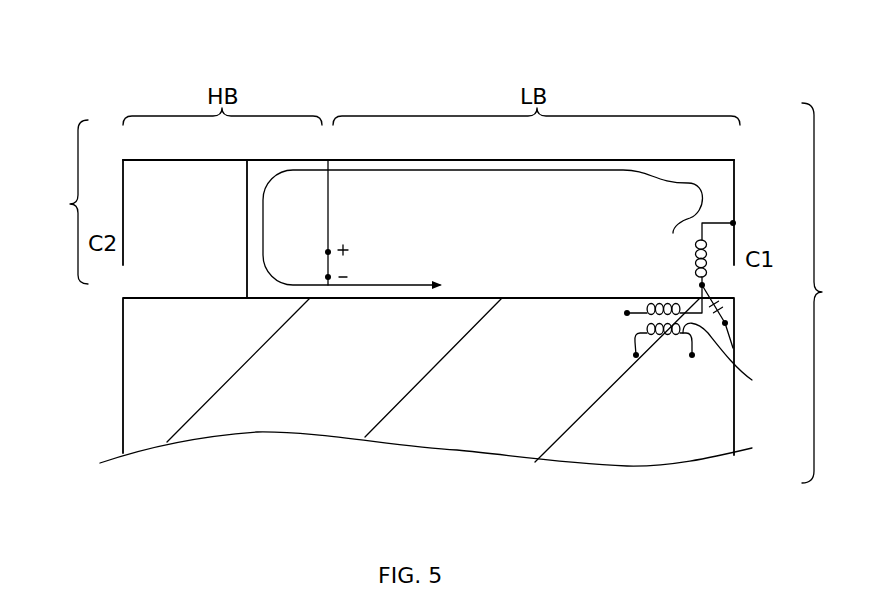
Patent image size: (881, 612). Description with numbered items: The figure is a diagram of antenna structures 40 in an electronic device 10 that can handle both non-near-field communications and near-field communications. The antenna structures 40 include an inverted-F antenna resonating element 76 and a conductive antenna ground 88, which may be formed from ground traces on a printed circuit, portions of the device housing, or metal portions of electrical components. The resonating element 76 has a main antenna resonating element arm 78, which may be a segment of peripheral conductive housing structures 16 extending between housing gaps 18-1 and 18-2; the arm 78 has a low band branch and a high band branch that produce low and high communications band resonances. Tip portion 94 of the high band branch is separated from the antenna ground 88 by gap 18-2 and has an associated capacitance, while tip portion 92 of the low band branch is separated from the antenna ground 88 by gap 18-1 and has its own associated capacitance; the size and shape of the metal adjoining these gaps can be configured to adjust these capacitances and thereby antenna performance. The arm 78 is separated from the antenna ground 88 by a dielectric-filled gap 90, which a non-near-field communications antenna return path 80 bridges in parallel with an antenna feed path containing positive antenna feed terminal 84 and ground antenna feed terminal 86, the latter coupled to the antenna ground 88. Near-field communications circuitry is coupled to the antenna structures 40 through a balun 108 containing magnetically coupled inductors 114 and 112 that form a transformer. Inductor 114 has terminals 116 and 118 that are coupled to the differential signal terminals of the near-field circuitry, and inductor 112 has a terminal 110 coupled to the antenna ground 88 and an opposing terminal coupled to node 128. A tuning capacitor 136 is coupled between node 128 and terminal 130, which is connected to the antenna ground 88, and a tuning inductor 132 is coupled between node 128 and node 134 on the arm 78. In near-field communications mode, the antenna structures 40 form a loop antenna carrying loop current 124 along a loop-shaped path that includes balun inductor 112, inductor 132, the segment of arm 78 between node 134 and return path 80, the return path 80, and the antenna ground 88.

The electronic device 10 is at (828, 293).
The peripheral conductive housing structures 16 is at (460, 212).
The gap 18-1 is at (742, 283).
The gap 18-2 is at (110, 284).
The antenna structures 40 is at (90, 80).
The inverted-F antenna resonating element 76 is at (64, 202).
The main antenna resonating element arm 78 is at (365, 160).
The non-near-field communications antenna return path 80 is at (246, 216).
The positive antenna feed terminal 84 is at (325, 251).
The ground antenna feed terminal 86 is at (327, 280).
The antenna ground 88 is at (122, 392).
The gap 90 is at (185, 180).
The tip portion 92 is at (736, 243).
The tip portion 94 is at (125, 240).
The balun 108 is at (676, 348).
The terminal 110 is at (625, 314).
The inductor 112 is at (648, 305).
The inductor 114 is at (740, 360).
The terminal 116 is at (636, 355).
The terminal 118 is at (692, 355).
The loop current 124 is at (450, 172).
The node 128 is at (700, 284).
The terminal 130 is at (735, 352).
The inductor 132 is at (675, 254).
The node 134 is at (735, 222).
The capacitor 136 is at (735, 308).